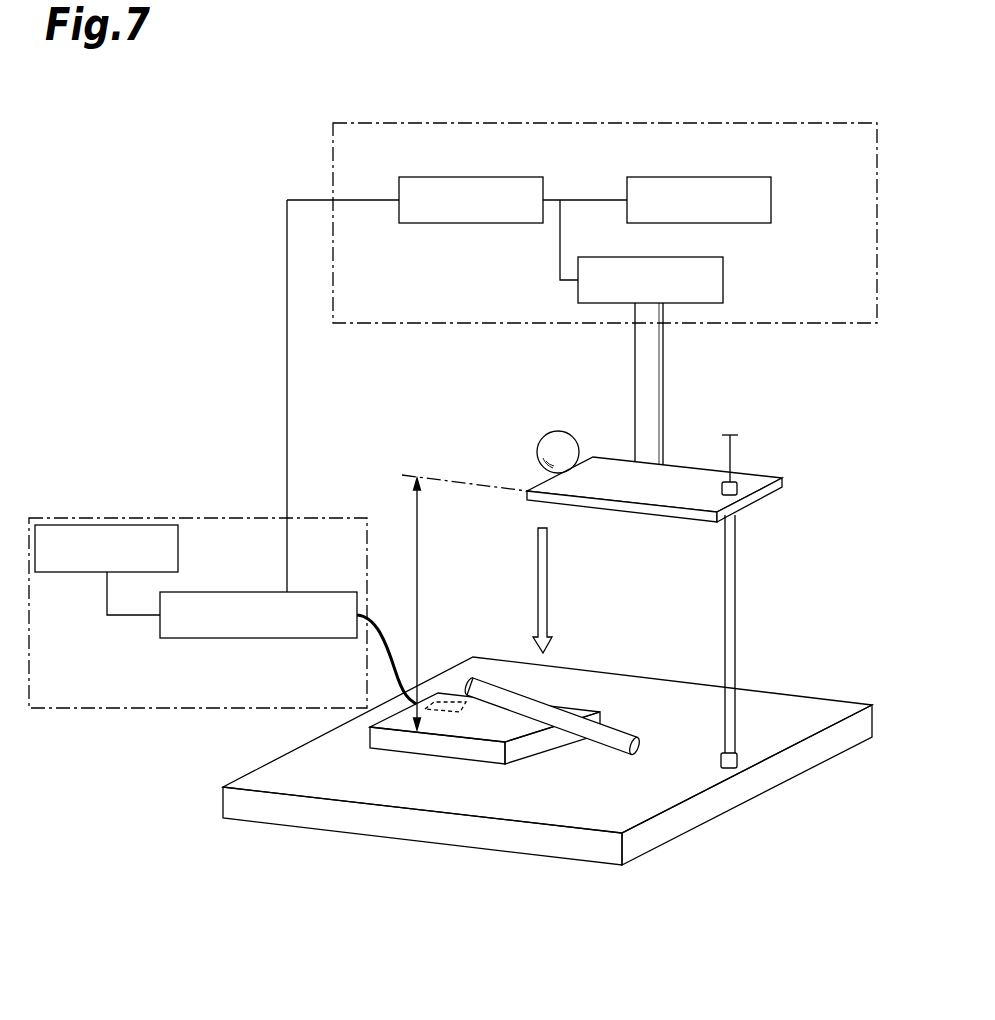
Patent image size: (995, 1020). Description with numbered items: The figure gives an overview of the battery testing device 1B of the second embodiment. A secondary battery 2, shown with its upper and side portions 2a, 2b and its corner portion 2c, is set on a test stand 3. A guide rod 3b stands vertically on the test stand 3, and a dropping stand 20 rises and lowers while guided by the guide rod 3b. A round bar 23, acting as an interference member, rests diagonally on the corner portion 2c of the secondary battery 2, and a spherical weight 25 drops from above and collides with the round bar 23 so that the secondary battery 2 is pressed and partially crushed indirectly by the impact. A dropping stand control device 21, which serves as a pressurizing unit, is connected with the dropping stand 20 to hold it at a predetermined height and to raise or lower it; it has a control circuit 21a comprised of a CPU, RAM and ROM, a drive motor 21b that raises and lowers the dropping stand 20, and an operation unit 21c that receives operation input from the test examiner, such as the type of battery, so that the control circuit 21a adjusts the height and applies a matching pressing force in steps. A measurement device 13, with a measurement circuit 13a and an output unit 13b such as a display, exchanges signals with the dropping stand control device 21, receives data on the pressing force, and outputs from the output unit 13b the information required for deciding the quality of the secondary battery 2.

The battery testing device 1B is at (187, 163).
The secondary battery 2 is at (488, 785).
The top surface of sample 2a is at (489, 716).
The front side surface of sample 2b is at (473, 748).
The corner portion 2c is at (528, 735).
The test stand 3 is at (773, 693).
The guide rod 3b is at (735, 577).
The measurement device 13 is at (173, 701).
The measurement circuit 13a is at (312, 592).
The output unit 13b is at (107, 524).
The dropping stand 20 is at (748, 472).
The dropping stand control device 21 is at (870, 160).
The control circuit 21a is at (468, 223).
The drive motor 21b is at (723, 280).
The operation unit 21c is at (771, 200).
The round bar 23 is at (603, 722).
The spherical weight 25 is at (547, 437).